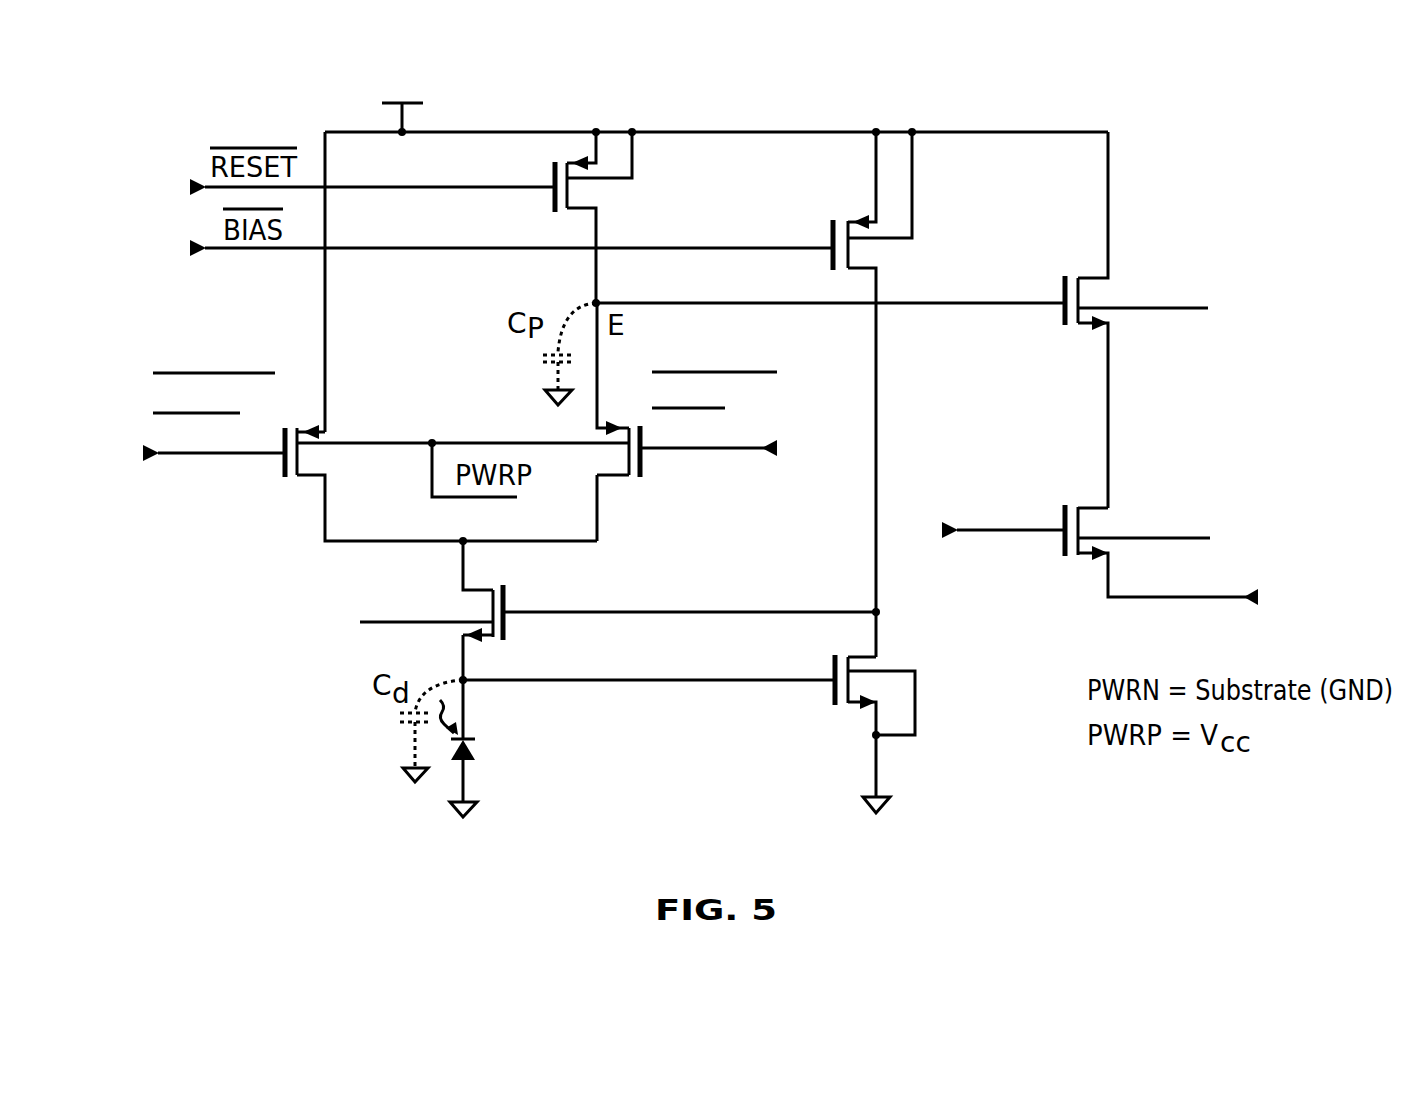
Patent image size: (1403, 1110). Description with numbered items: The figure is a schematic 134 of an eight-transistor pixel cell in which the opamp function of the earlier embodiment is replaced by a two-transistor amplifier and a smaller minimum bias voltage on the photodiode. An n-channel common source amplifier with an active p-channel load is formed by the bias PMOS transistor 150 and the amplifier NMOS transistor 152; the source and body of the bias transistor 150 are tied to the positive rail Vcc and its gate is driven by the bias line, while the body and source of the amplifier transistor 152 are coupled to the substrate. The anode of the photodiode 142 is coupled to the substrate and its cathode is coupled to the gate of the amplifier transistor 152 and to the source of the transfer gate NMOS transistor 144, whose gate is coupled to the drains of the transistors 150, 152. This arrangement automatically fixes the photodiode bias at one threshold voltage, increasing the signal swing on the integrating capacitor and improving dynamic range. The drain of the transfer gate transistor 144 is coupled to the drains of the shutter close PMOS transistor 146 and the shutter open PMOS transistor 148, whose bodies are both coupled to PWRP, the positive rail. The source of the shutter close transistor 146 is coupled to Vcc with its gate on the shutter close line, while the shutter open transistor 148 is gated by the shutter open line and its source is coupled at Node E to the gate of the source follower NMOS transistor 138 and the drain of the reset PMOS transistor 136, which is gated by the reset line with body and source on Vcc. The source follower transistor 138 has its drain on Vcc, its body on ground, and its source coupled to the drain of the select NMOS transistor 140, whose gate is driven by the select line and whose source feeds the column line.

The schematic 134 is at (1200, 133).
The reset PMOS transistor 136 is at (551, 196).
The source follower NMOS transistor 138 is at (1083, 274).
The select NMOS transistor 140 is at (1088, 503).
The photodiode 142 is at (477, 751).
The transfer gate NMOS transistor 144 is at (508, 590).
The shutter close PMOS transistor 146 is at (281, 467).
The shutter open PMOS transistor 148 is at (642, 467).
The bias PMOS transistor 150 is at (828, 257).
The amplifier NMOS transistor 152 is at (830, 692).